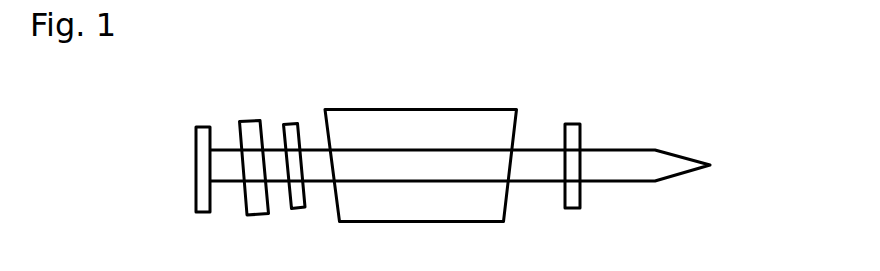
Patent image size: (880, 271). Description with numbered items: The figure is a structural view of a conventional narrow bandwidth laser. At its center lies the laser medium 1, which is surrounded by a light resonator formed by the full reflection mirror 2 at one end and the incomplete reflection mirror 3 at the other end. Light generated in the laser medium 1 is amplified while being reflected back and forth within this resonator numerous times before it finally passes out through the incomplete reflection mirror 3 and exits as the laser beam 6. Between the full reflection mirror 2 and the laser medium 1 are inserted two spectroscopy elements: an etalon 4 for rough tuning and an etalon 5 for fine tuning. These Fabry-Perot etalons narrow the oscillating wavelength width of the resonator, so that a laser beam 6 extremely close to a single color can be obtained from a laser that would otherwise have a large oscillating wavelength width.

The laser medium 1 is at (475, 107).
The full reflection mirror 2 is at (200, 127).
The incomplete reflection mirror 3 is at (575, 125).
The etalon for rough tuning 4 is at (295, 210).
The etalon for fine tuning 5 is at (256, 217).
The laser beam 6 is at (635, 148).